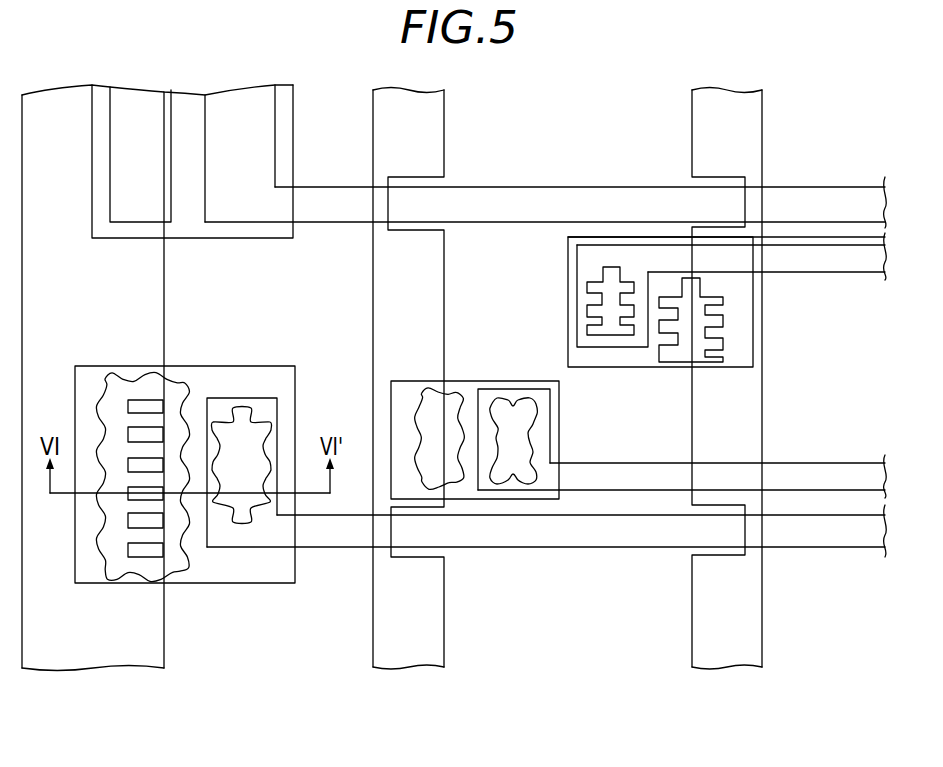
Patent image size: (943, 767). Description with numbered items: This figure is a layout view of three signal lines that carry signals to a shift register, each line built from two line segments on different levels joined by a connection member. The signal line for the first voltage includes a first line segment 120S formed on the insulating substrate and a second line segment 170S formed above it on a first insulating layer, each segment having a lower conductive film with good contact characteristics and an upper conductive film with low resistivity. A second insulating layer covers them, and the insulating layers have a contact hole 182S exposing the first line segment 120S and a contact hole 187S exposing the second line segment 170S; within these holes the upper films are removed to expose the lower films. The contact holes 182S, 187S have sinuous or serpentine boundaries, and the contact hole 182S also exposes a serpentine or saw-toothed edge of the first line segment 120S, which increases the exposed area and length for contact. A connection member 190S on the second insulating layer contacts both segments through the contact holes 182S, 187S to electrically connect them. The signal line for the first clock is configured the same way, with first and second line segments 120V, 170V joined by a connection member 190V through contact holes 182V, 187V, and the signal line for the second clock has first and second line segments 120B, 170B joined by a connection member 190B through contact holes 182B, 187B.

The first line segment 120S is at (97, 670).
The first line segment 120V is at (410, 670).
The first line segment 120B is at (730, 668).
The second line segment 170S is at (331, 553).
The second line segment 170V is at (623, 490).
The second line segment 170B is at (828, 272).
The contact hole 182S is at (133, 376).
The contact hole 182V is at (447, 391).
The contact hole 182B is at (720, 294).
The contact hole 187S is at (248, 407).
The contact hole 187V is at (538, 437).
The contact hole 187B is at (611, 266).
The connection member 190S is at (220, 366).
The connection member 190V is at (513, 381).
The connection member 190B is at (753, 347).